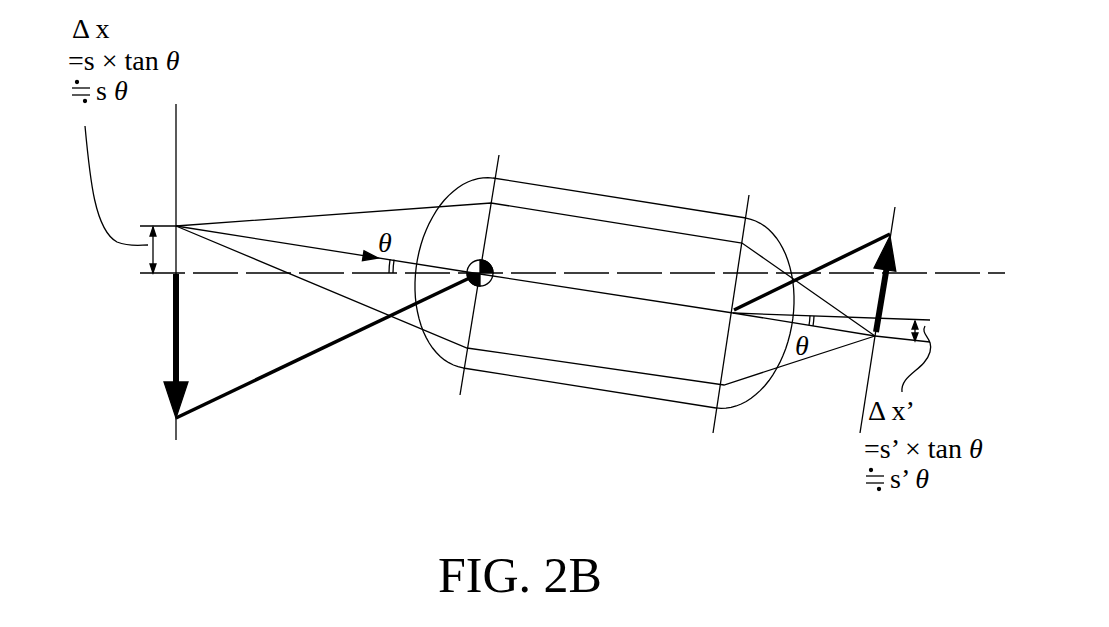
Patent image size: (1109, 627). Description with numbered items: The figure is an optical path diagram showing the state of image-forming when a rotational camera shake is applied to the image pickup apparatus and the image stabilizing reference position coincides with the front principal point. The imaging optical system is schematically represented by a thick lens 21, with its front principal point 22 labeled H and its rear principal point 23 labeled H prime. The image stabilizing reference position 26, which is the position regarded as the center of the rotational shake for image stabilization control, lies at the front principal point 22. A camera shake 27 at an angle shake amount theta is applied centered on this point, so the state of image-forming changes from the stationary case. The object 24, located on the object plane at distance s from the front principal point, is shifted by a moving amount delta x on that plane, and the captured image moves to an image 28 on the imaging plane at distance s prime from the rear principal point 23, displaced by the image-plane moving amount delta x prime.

The thick lens 21 is at (645, 192).
The front principal point 22 is at (523, 111).
The rear principal point 23 is at (768, 146).
The object 24 is at (173, 334).
The image stabilizing reference position 26 is at (506, 252).
The camera shake 27 is at (363, 260).
The image 28 is at (889, 285).